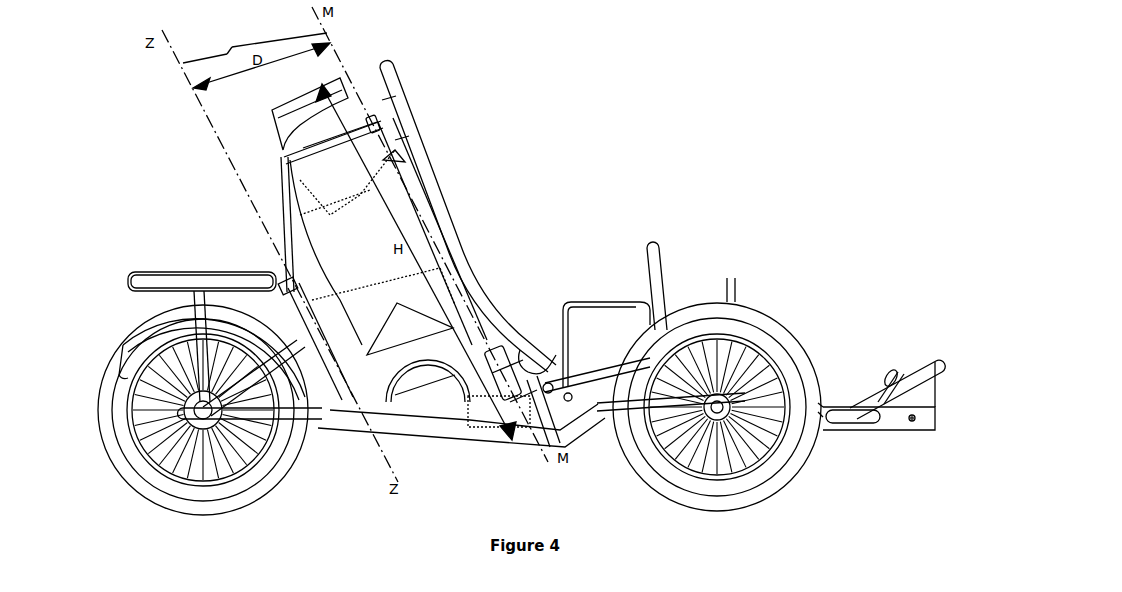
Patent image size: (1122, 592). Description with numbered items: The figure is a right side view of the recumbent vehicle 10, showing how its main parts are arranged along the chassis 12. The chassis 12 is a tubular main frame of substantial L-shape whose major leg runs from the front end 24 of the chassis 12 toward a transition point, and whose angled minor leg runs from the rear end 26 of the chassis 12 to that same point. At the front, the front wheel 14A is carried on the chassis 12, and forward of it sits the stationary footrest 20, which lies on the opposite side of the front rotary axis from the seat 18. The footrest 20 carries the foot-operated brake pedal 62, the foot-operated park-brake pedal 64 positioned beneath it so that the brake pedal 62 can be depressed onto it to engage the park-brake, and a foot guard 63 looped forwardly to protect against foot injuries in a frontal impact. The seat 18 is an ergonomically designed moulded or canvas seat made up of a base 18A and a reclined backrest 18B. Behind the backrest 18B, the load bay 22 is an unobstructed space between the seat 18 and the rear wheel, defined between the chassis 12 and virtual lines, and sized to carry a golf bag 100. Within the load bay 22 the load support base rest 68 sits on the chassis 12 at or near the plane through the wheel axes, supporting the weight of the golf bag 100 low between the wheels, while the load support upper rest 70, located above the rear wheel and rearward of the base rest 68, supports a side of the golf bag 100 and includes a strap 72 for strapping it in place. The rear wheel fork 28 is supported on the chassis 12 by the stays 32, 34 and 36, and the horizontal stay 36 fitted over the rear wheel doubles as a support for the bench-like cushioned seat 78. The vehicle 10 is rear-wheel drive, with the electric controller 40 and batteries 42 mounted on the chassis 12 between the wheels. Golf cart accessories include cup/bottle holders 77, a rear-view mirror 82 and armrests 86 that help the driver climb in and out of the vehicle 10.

The recumbent vehicle 10 is at (666, 114).
The chassis 12 is at (530, 440).
The front wheel 14A is at (762, 320).
The seat 18 is at (543, 360).
The seat base 18A is at (610, 353).
The reclined backrest 18B is at (432, 167).
The stationary footrest 20 is at (850, 417).
The load bay 22 is at (255, 41).
The front end of the chassis 24 is at (937, 424).
The rear end of the chassis 26 is at (277, 260).
The rear wheel fork 28 is at (282, 432).
The stay 32 is at (298, 348).
The stay 34 is at (210, 296).
The horizontal stay 36 is at (137, 290).
The electric controller 40 is at (490, 418).
The batteries 42 is at (497, 340).
The foot-operated brake pedal 62 is at (883, 370).
The foot guard 63 is at (928, 362).
The foot-operated park-brake pedal 64 is at (885, 400).
The load support base rest 68 is at (403, 402).
The load support upper rest 70 is at (279, 123).
The strap 72 is at (362, 120).
The cup/bottle holder 77 is at (515, 340).
The bench-like cushioned seat 78 is at (180, 278).
The rear-view mirror 82 is at (733, 278).
The armrests 86 is at (613, 302).
The golf bag 100 is at (385, 160).